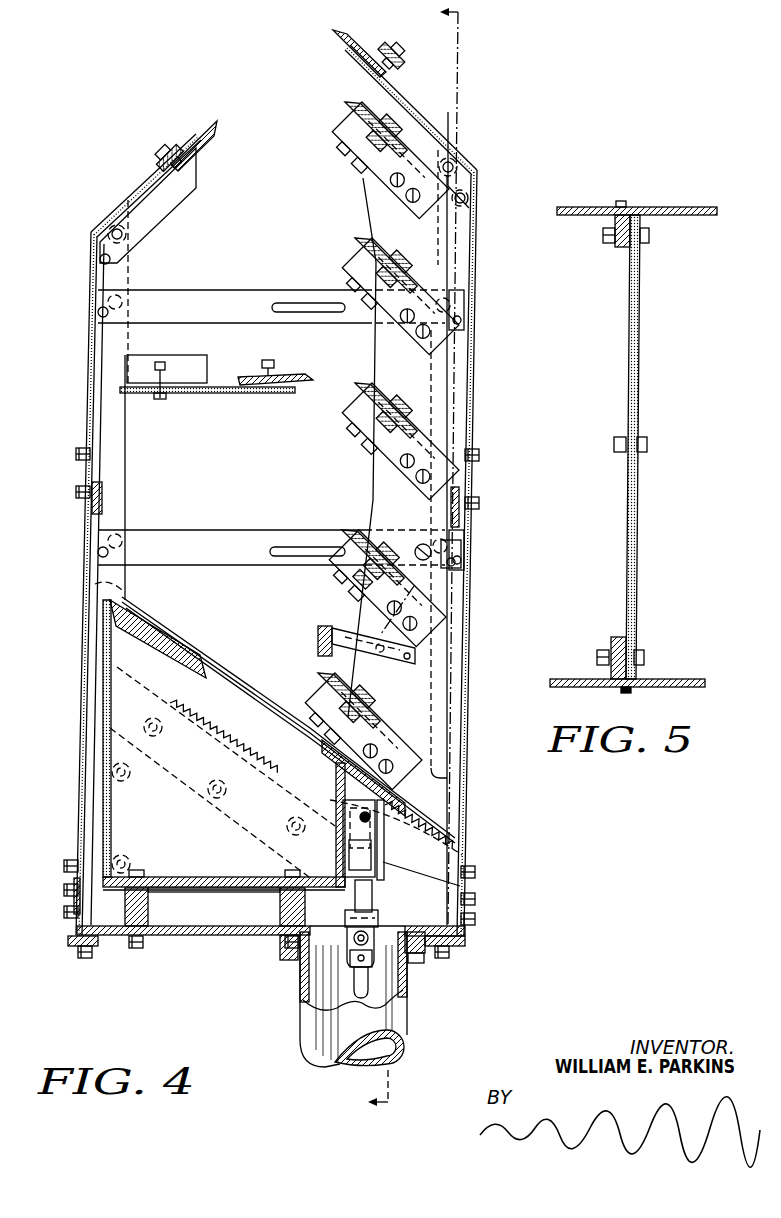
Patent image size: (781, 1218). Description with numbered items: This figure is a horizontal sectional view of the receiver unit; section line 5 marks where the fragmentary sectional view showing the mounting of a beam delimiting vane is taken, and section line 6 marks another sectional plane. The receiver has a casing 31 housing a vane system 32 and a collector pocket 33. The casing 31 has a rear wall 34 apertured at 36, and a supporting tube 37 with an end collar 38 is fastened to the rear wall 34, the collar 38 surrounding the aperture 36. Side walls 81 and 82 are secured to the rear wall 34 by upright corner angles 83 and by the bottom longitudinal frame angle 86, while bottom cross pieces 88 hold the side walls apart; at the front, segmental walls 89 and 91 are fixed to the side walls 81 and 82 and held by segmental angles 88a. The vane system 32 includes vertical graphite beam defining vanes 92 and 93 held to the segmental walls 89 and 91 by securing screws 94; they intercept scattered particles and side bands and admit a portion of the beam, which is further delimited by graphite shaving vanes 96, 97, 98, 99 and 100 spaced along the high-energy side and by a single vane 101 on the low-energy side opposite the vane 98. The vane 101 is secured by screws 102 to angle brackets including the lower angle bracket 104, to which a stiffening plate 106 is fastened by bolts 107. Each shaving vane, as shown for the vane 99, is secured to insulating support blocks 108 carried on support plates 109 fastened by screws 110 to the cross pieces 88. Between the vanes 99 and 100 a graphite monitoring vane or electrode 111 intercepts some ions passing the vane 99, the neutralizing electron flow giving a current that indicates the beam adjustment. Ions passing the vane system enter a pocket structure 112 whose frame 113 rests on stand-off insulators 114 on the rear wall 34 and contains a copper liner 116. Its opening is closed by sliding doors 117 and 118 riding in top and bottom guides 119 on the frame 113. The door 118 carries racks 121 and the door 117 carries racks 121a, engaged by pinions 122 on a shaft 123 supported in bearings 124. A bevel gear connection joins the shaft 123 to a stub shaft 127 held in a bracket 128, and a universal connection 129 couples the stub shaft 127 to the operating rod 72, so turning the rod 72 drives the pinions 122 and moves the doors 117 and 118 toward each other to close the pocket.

In FIG. 4, the section line 5— 5 is at (422, 605).
In FIG. 4, the section line 6- 6 is at (406, 556).
In FIG. 4, the casing 31 is at (76, 827).
In FIG. 4, the vane system 32 is at (436, 369).
In FIG. 4, the collector pocket 33 is at (183, 839).
In FIG. 4, the rear wall 34 is at (256, 938).
In FIG. 4, the aperture 36 is at (350, 957).
In FIG. 4, the supporting tube 37 is at (300, 1033).
In FIG. 4, the end collar 38 is at (423, 953).
In FIG. 4, the operating rod 72 is at (370, 977).
In FIG. 4, the side wall 81 is at (90, 633).
In FIG. 4, the side wall 82 is at (461, 723).
In FIG. 4, the upright corner angles 83 is at (76, 936).
In FIG. 4, the longitudinal frame angle 86 is at (122, 466).
In FIG. 4, the bottom cross pieces 88 is at (232, 295).
In FIG. 4, the segmental angles 88a is at (152, 222).
In FIG. 4, the segmental wall 89 is at (126, 200).
In FIG. 4, the segmental wall 91 is at (448, 138).
In FIG. 4, the beam defining vane 92 is at (214, 126).
In FIG. 4, the beam defining vane 93 is at (338, 43).
In FIG. 4, the securing screws 94 is at (160, 164).
In FIG. 4, the shaving vane 96 is at (347, 113).
In FIG. 4, the shaving vane 97 is at (356, 247).
In FIG. 4, the shaving vane 98 is at (365, 405).
In FIG. 4, the shaving vane 99 is at (343, 530).
In FIG. 5, the shaving vane 99 is at (642, 548).
In FIG. 4, the shaving vane 100 is at (322, 681).
In FIG. 4, the ion intercepting vane 101 is at (287, 376).
In FIG. 4, the screws 102 is at (264, 368).
In FIG. 4, the lower angle bracket 104 is at (152, 357).
In FIG. 4, the stiffening plate 106 is at (248, 397).
In FIG. 4, the bolts 107 is at (172, 375).
In FIG. 4, the support blocks 108 is at (358, 578).
In FIG. 5, the support blocks 108 is at (615, 222).
In FIG. 4, the support plates 109 is at (380, 492).
In FIG. 5, the support plates 109 is at (679, 217).
In FIG. 4, the fastening screws 110 is at (432, 549).
In FIG. 4, the monitoring vane 111 is at (324, 630).
In FIG. 4, the pocket structure 112 is at (258, 893).
In FIG. 4, the frame 113 is at (212, 888).
In FIG. 4, the stand-off insulators 114 is at (150, 905).
In FIG. 4, the liner 116 is at (111, 756).
In FIG. 4, the sliding door 117 is at (187, 647).
In FIG. 4, the sliding door 118 is at (400, 802).
In FIG. 4, the guides 119 is at (192, 596).
In FIG. 4, the racks 121 is at (445, 838).
In FIG. 4, the racks 121a is at (240, 741).
In FIG. 4, the pinions 122 is at (462, 857).
In FIG. 4, the shaft 123 is at (360, 813).
In FIG. 4, the bearings 124 is at (352, 855).
In FIG. 4, the stub shaft 127 is at (357, 900).
In FIG. 4, the bracket 128 is at (460, 886).
In FIG. 4, the universal connection 129 is at (303, 1001).